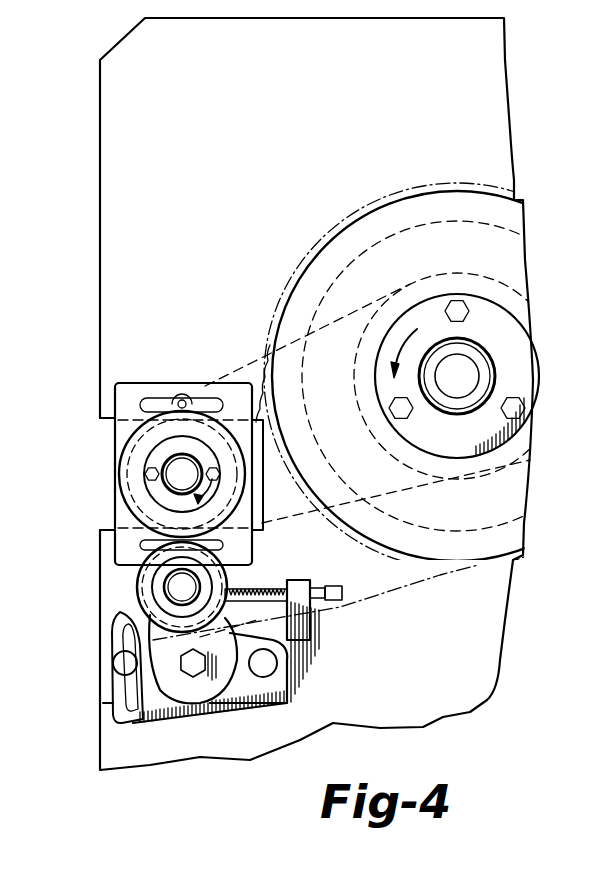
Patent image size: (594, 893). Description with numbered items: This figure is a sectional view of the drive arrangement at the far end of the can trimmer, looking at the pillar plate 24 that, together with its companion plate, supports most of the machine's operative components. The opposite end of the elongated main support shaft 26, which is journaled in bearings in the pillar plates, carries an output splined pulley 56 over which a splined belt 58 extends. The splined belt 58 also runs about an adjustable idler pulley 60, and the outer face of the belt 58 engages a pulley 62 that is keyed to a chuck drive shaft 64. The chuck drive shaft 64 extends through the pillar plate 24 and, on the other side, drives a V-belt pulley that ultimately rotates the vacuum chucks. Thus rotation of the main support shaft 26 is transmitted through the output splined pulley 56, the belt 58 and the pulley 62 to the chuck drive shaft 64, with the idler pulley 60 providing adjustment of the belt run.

The pillar plate 24 is at (316, 394).
The main support shaft 26 is at (458, 363).
The output splined pulley 56 is at (405, 203).
The splined belt 58 is at (470, 568).
The adjustable idler pulley 60 is at (210, 575).
The pulley 62 is at (137, 495).
The chuck drive shaft 64 is at (168, 456).